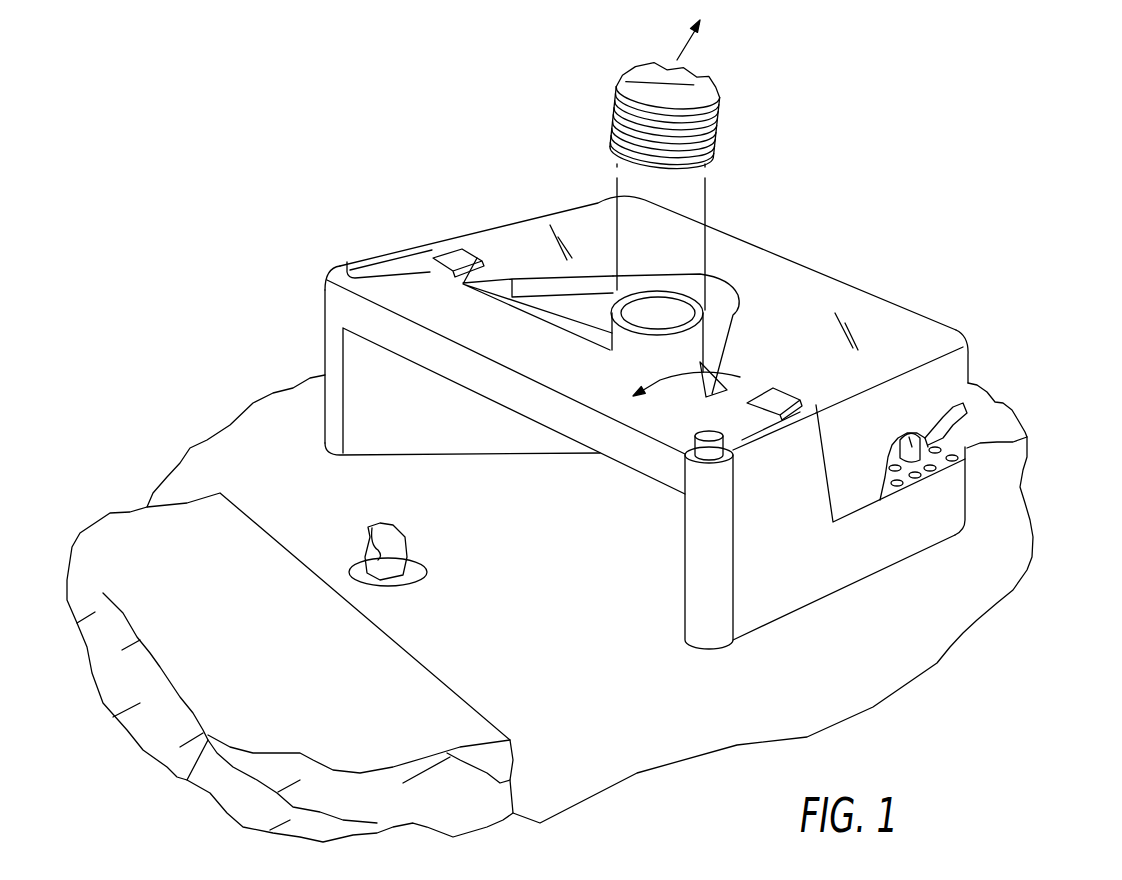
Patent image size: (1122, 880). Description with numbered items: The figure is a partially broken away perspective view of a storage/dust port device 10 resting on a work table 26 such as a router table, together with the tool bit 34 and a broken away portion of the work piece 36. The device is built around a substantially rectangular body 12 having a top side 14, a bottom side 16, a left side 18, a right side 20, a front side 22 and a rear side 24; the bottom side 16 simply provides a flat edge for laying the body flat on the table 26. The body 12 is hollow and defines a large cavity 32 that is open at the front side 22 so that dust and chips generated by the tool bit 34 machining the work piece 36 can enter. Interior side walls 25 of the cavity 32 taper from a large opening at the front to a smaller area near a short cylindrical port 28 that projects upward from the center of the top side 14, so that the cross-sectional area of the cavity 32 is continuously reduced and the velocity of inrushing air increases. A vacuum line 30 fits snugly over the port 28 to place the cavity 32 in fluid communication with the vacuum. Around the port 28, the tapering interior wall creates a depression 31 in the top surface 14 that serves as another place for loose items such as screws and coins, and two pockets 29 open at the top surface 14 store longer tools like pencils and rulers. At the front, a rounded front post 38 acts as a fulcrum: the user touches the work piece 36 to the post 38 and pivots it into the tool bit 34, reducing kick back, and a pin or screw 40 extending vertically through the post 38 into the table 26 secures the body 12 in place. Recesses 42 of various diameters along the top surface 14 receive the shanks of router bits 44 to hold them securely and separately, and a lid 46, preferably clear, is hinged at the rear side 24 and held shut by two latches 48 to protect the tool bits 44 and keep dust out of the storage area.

The storage/dust port device 10 is at (913, 233).
The body 12 is at (457, 317).
The top side 14 is at (524, 353).
The bottom side 16 is at (422, 456).
The left side 18 is at (363, 272).
The right side 20 is at (784, 604).
The front side 22 is at (332, 351).
The rear side 24 is at (927, 312).
The interior side walls 25 is at (402, 439).
The work table 26 is at (653, 768).
The cylindrical port 28 is at (624, 335).
The pockets 29 is at (380, 272).
The vacuum line 30 is at (613, 120).
The depression 31 is at (717, 318).
The cavity 32 is at (557, 430).
The tool bit 34 is at (420, 582).
The work piece 36 is at (267, 705).
The front post 38 is at (693, 590).
The pin or screw 40 is at (700, 452).
The recesses 42 is at (1027, 437).
The router bits 44 is at (953, 403).
The lid 46 is at (823, 345).
The latches 48 is at (450, 252).